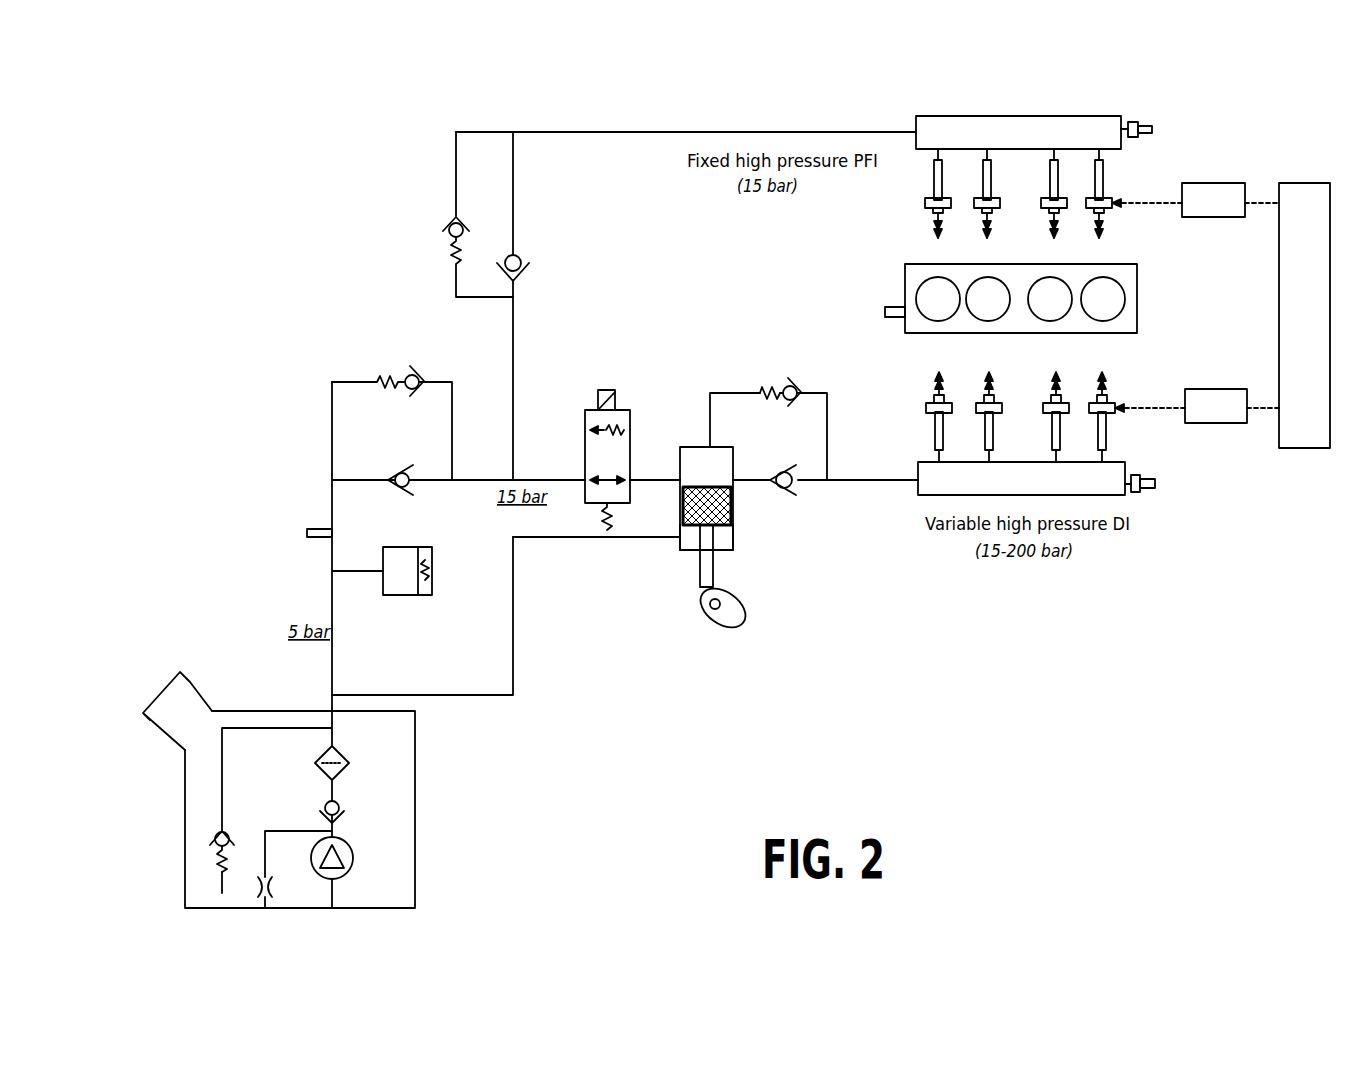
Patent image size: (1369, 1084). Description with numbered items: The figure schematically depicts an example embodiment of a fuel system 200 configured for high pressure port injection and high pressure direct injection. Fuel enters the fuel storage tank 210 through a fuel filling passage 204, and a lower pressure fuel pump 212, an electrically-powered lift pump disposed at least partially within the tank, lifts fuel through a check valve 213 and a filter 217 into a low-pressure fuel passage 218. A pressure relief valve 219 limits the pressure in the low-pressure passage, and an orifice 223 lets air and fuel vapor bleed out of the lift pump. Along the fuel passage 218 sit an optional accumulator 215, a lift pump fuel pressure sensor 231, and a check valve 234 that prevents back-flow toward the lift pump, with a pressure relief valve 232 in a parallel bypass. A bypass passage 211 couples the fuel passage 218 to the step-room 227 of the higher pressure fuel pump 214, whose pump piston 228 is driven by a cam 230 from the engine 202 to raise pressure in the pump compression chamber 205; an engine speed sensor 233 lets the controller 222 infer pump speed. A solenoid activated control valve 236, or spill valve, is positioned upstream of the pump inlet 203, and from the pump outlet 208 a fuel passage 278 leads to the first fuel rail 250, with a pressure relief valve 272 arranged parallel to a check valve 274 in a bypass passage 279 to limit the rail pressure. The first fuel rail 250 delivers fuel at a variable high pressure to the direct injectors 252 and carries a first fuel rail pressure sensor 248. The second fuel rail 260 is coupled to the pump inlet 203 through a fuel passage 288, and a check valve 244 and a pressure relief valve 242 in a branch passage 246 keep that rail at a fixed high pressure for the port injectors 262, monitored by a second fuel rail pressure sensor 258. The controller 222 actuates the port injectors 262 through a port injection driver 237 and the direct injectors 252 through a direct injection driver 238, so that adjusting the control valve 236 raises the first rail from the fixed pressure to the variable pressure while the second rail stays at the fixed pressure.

The fuel system 200 is at (138, 158).
The engine 202 is at (1045, 298).
The inlet 203 is at (655, 466).
The fuel filling passage 204 is at (191, 708).
The pump compression chamber 205 is at (728, 503).
The outlet 208 is at (751, 460).
The fuel storage tank 210 is at (324, 809).
The bypass passage 211 is at (436, 629).
The lower pressure fuel pump 212 is at (351, 871).
The check valve 213 is at (350, 804).
The higher pressure fuel pump 214 is at (691, 487).
The accumulator 215 is at (403, 587).
The filter 217 is at (347, 756).
The fuel passage 218 is at (355, 595).
The pressure relief valve 219 is at (184, 851).
The controller 222 is at (1304, 315).
The orifice 223 is at (248, 872).
The step-room 227 is at (684, 568).
The pump piston 228 is at (737, 557).
The cam 230 is at (748, 635).
The lift pump fuel pressure sensor 231 is at (312, 511).
The pressure relief valve 232 is at (392, 409).
The engine speed sensor 233 is at (888, 287).
The check valve 234 is at (413, 464).
The control valve 236 is at (590, 448).
The port injection driver 237 is at (1195, 200).
The direct injection driver 238 is at (1197, 406).
The pressure relief valve 242 is at (433, 221).
The check valve 244 is at (533, 244).
The bypass passage 246 is at (484, 214).
The first fuel rail pressure sensor 248 is at (1166, 475).
The first fuel rail 250 is at (1042, 464).
The direct injectors 252 is at (1020, 404).
The second fuel rail pressure sensor 258 is at (1161, 136).
The second fuel rail 260 is at (1039, 148).
The port injectors 262 is at (1018, 206).
The pressure relief valve 272 is at (789, 378).
The check valve 274 is at (794, 463).
The fuel passage 278 is at (872, 460).
The bypass passage 279 is at (768, 411).
The fuel passage 288 is at (686, 111).